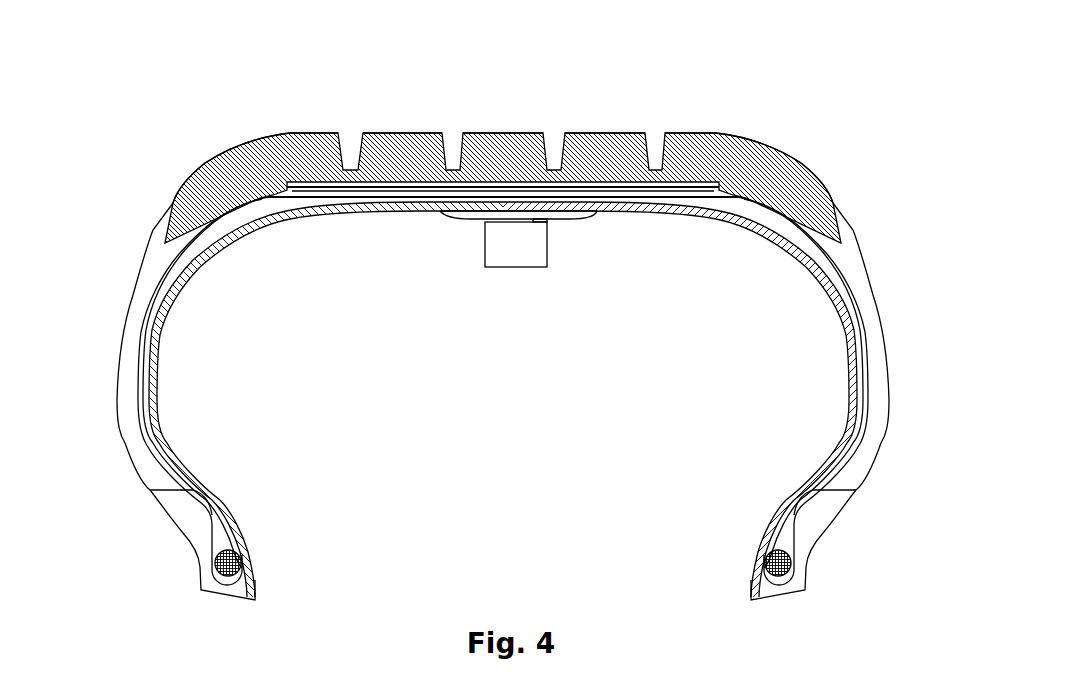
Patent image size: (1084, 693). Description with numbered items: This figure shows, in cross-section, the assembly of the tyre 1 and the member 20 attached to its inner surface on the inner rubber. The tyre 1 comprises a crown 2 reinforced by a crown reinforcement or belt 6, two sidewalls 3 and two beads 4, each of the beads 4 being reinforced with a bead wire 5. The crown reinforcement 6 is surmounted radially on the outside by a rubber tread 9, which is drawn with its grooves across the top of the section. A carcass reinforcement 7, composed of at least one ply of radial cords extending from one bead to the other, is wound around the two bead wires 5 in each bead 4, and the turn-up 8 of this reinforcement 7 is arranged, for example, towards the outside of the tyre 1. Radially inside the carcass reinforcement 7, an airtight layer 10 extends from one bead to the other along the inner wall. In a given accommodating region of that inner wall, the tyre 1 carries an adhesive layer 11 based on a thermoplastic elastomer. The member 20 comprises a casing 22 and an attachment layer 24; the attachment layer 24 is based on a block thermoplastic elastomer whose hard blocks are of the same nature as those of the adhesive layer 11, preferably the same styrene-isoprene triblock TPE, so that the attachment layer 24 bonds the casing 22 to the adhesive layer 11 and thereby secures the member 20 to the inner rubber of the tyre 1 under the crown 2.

The tyre 1 is at (322, 88).
The crown 2 is at (535, 118).
The sidewalls 3 is at (125, 356).
The beads 4 is at (187, 513).
The bead wire 5 is at (201, 590).
The crown reinforcement 6 is at (590, 195).
The carcass reinforcement 7 is at (172, 272).
The turn-up 8 is at (185, 487).
The rubber tread 9 is at (490, 130).
The airtight layer 10 is at (153, 357).
The adhesive layer 11 is at (460, 217).
The member 20 is at (560, 278).
The casing 22 is at (530, 248).
The attachment layer 24 is at (547, 220).